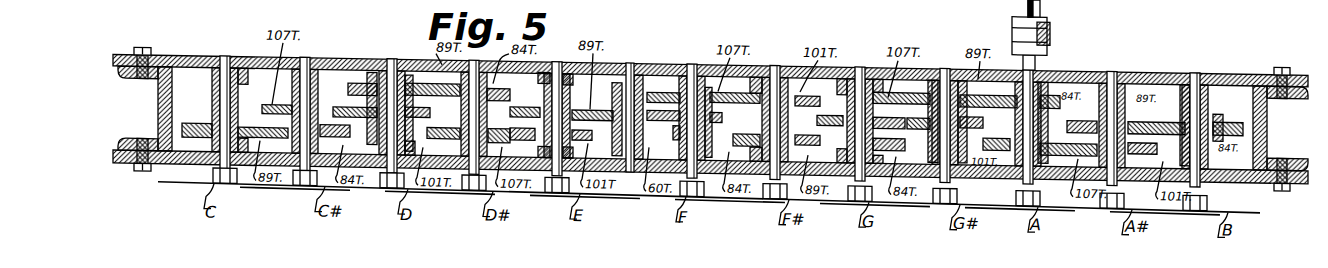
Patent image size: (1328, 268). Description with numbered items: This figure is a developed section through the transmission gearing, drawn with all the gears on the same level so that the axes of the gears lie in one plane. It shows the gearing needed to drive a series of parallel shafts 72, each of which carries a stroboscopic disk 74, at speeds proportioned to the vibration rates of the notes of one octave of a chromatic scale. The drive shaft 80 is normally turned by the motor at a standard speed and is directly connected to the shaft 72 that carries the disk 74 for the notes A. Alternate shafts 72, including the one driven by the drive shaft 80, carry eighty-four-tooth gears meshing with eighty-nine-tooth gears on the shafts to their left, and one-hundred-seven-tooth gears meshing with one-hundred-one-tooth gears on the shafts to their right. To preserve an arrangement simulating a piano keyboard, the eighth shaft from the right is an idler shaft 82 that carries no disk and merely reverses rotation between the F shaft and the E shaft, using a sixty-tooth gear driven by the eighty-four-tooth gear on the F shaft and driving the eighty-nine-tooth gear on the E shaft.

The parallel shafts 72 is at (228, 70).
The stroboscopic disks 74 is at (170, 180).
The drive shaft 80 is at (1022, 0).
The idler shaft 82 is at (633, 70).